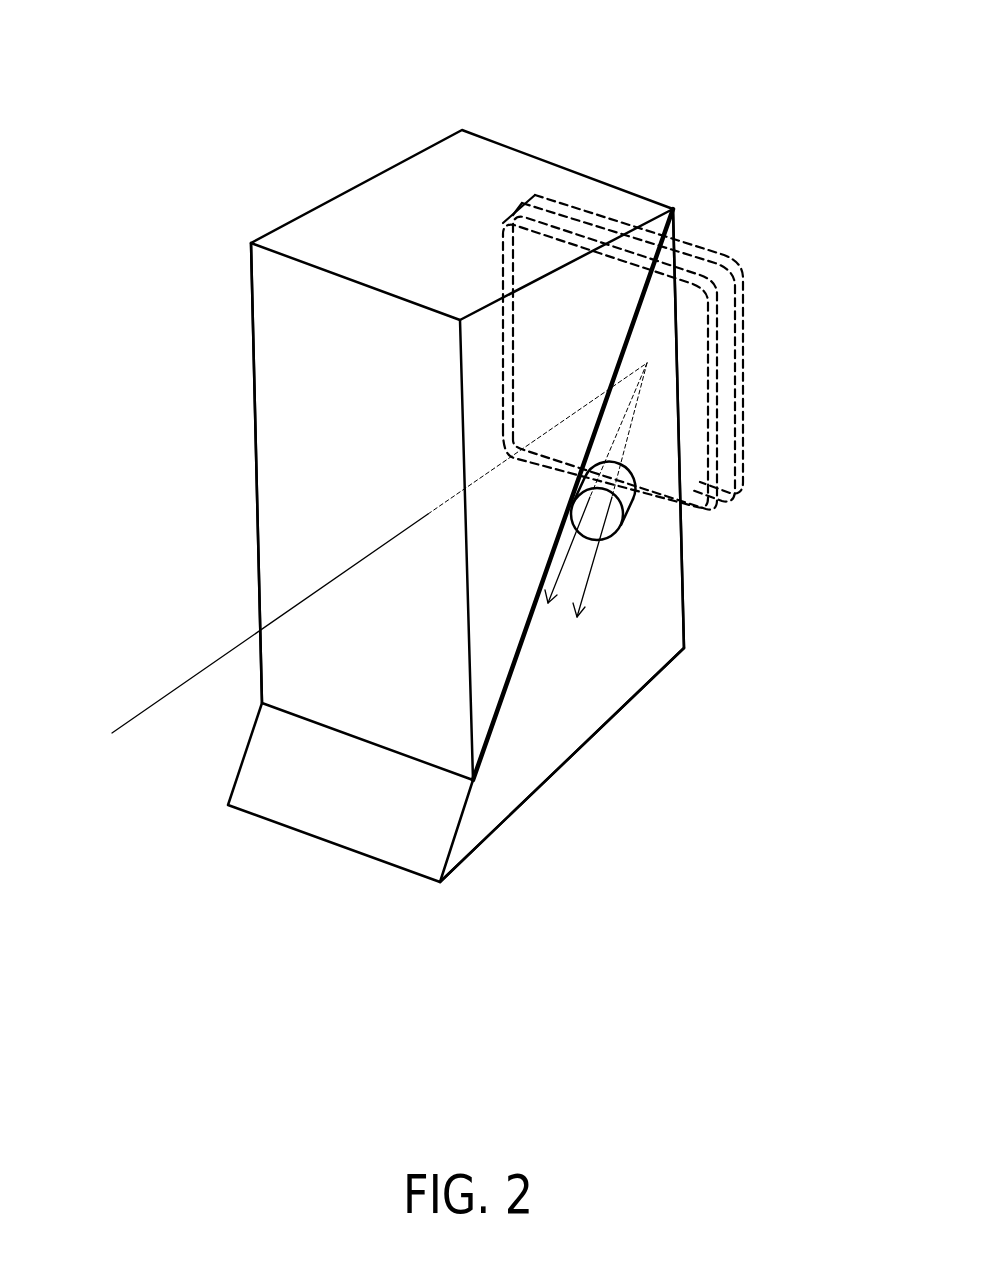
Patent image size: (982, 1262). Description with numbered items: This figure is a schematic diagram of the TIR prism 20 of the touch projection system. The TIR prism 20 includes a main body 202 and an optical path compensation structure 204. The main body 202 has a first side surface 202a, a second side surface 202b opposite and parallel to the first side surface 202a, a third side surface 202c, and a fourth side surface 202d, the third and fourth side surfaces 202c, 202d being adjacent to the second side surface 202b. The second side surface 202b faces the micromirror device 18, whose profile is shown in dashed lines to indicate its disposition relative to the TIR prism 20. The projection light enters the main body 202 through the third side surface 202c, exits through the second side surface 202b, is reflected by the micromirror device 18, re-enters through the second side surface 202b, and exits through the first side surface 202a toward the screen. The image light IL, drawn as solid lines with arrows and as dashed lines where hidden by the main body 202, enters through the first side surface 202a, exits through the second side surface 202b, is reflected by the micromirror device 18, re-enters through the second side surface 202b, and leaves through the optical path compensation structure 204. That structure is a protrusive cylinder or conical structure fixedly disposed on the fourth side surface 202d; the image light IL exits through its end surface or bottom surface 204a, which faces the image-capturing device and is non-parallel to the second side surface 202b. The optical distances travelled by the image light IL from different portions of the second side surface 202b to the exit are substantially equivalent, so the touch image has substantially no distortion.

The TIR prism 20 is at (457, 474).
The main body 202 is at (472, 513).
The first side surface 202a is at (293, 425).
The second side surface 202b is at (675, 233).
The third side surface 202c is at (520, 805).
The fourth side surface 202d is at (632, 650).
The micromirror device 18 is at (743, 328).
The optical path compensation structure 204 is at (685, 534).
The bottom surface 204a is at (613, 530).
The image light IL is at (146, 712).